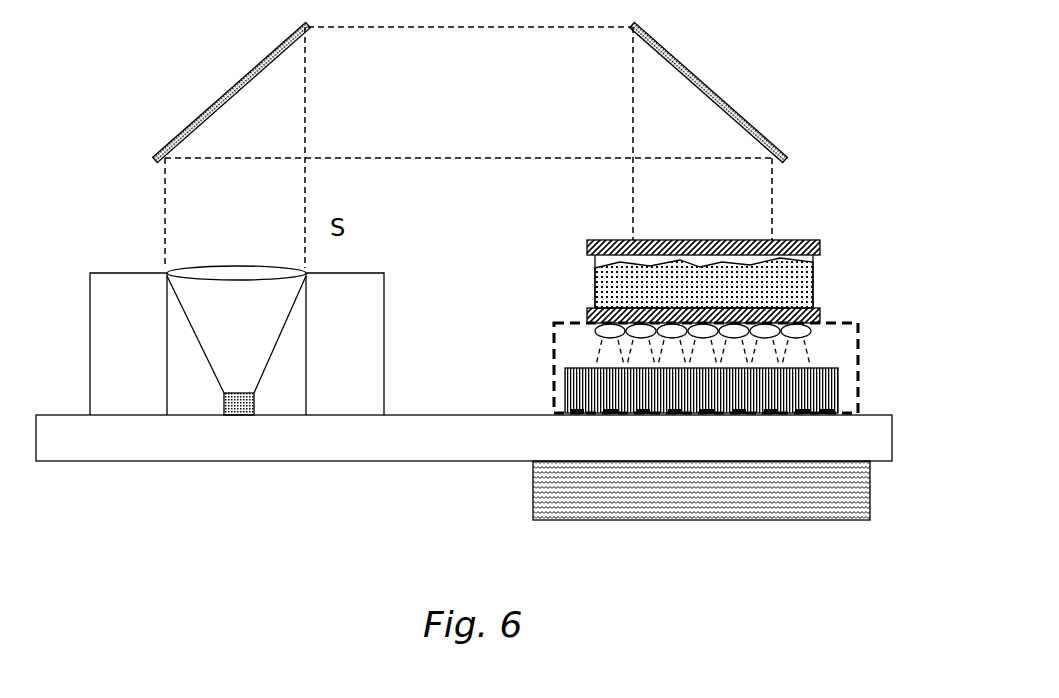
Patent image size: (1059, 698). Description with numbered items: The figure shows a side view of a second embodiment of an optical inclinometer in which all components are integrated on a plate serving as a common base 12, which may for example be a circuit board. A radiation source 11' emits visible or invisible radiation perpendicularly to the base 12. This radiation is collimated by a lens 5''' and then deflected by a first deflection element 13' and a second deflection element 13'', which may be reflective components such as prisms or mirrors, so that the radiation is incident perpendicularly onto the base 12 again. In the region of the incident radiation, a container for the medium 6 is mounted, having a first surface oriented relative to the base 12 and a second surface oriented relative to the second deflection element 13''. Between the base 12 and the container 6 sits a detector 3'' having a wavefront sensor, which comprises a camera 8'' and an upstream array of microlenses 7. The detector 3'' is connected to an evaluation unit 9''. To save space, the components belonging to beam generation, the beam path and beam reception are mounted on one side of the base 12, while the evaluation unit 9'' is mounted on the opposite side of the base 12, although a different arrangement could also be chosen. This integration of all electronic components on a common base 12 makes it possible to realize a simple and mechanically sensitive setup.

The first deflection element 13' is at (194, 92).
The second deflection element 13'' is at (724, 92).
The lens 5''' is at (184, 251).
The radiation source 11' is at (173, 455).
The base 12 is at (464, 480).
The container for the medium 6 is at (653, 238).
The array of microlenses 7 is at (649, 281).
The detector 3'' is at (647, 368).
The camera 8'' is at (637, 391).
The evaluation unit 9'' is at (701, 519).